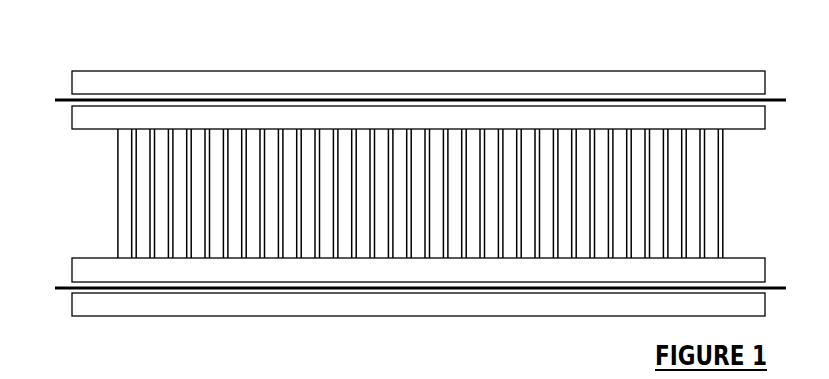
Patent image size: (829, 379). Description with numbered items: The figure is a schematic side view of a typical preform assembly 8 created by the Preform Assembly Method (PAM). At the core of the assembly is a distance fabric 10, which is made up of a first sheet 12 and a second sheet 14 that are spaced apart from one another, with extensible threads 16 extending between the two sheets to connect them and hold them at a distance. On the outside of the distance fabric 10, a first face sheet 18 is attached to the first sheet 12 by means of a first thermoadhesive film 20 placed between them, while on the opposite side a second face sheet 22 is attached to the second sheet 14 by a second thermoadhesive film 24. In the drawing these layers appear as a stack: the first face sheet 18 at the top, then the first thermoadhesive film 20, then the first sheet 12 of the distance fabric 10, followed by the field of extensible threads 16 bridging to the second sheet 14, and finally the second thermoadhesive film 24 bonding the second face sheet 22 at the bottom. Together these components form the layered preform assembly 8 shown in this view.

The preform assembly 8 is at (115, 71).
The distance fabric 10 is at (416, 193).
The first sheet 12 is at (765, 116).
The second sheet 14 is at (765, 270).
The extensible threads 16 is at (115, 208).
The first face sheet 18 is at (347, 72).
The first thermoadhesive film 20 is at (61, 104).
The second face sheet 22 is at (318, 318).
The second thermoadhesive film 24 is at (61, 292).